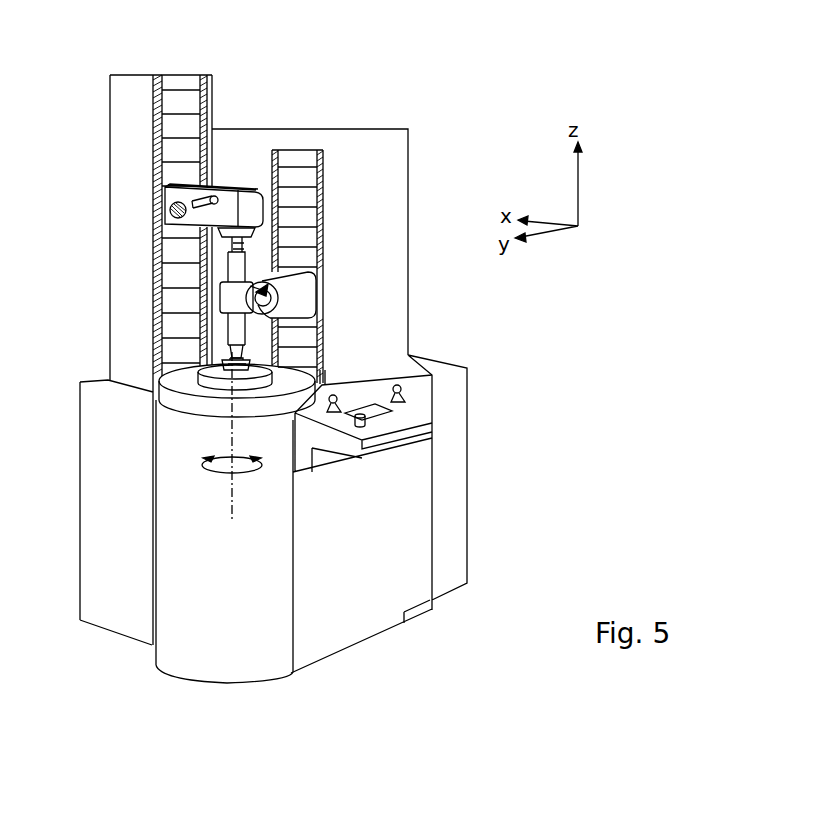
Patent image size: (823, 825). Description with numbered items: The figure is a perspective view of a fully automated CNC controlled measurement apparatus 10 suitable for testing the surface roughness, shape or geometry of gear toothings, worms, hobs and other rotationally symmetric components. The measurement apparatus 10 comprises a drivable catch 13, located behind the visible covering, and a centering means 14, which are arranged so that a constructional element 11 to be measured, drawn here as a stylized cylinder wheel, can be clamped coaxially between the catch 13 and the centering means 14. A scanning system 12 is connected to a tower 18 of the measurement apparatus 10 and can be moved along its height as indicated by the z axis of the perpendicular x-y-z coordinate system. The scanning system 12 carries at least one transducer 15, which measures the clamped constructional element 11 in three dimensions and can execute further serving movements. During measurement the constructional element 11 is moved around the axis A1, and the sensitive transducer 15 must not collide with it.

The measurement apparatus 10 is at (470, 75).
The tower 18 is at (393, 175).
The centering means 14 is at (240, 242).
The constructional element 11 is at (222, 299).
The scanning system 12 is at (291, 321).
The transducer 15 is at (262, 290).
The catch 13 is at (222, 361).
The axis A1 is at (232, 453).